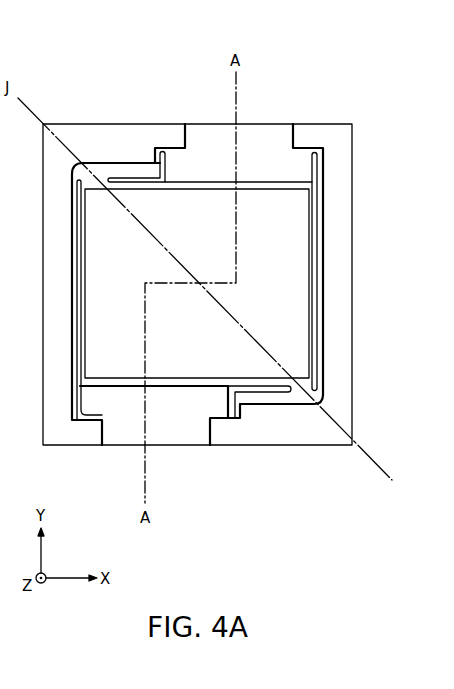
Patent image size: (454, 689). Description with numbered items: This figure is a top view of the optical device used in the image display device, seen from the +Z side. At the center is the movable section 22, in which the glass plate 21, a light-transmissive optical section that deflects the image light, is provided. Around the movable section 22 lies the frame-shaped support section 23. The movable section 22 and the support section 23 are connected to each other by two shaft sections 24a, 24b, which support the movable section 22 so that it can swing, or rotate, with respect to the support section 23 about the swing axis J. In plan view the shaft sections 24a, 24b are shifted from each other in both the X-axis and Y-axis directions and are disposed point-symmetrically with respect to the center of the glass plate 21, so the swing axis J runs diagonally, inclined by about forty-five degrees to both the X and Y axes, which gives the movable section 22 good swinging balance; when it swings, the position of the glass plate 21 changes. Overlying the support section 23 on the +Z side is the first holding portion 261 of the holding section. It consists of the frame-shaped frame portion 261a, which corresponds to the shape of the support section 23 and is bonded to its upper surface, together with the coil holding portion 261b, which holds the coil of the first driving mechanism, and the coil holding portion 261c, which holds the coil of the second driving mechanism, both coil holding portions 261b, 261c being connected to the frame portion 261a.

The glass plate 21 is at (105, 237).
The movable section 22 is at (82, 293).
The support section 23 is at (260, 398).
The shaft section 24a is at (100, 176).
The shaft section 24b is at (298, 393).
The first holding portion 261 is at (352, 295).
The frame portion 261a is at (320, 135).
The coil holding portion 261b is at (262, 135).
The coil holding portion 261c is at (178, 433).